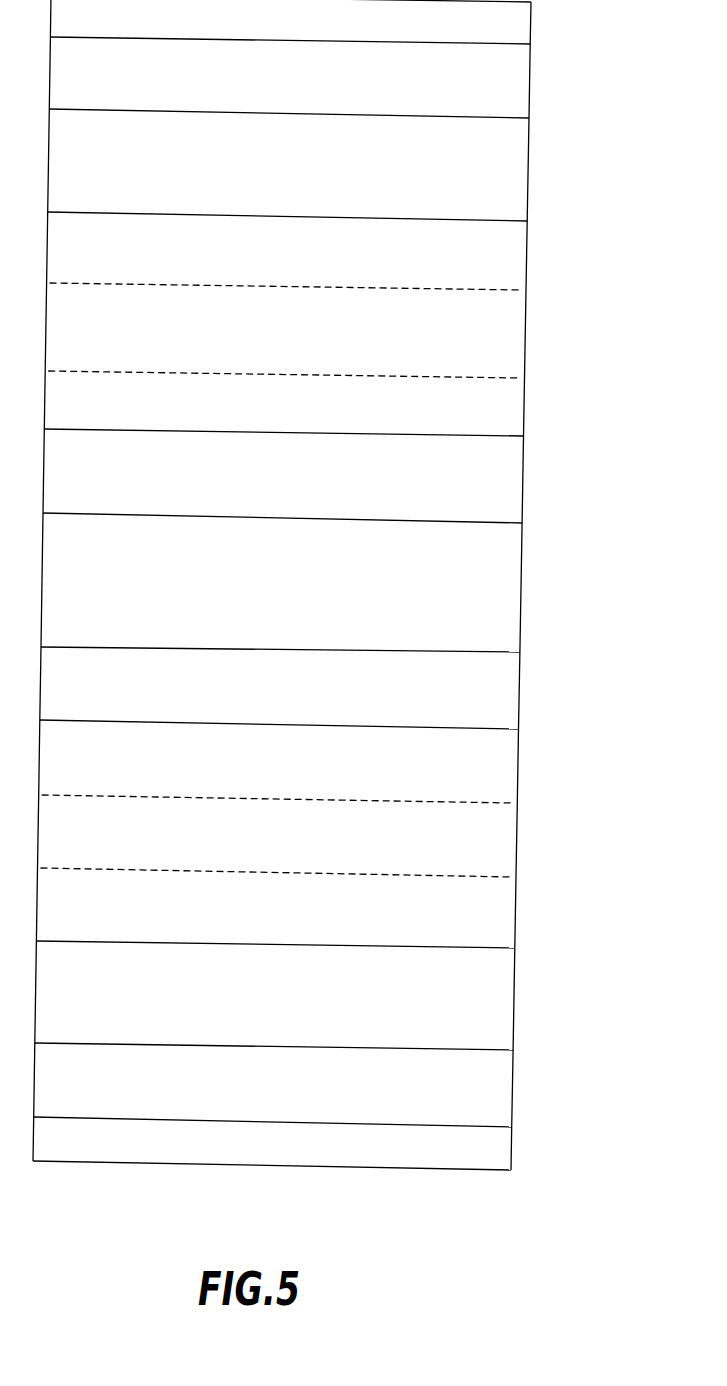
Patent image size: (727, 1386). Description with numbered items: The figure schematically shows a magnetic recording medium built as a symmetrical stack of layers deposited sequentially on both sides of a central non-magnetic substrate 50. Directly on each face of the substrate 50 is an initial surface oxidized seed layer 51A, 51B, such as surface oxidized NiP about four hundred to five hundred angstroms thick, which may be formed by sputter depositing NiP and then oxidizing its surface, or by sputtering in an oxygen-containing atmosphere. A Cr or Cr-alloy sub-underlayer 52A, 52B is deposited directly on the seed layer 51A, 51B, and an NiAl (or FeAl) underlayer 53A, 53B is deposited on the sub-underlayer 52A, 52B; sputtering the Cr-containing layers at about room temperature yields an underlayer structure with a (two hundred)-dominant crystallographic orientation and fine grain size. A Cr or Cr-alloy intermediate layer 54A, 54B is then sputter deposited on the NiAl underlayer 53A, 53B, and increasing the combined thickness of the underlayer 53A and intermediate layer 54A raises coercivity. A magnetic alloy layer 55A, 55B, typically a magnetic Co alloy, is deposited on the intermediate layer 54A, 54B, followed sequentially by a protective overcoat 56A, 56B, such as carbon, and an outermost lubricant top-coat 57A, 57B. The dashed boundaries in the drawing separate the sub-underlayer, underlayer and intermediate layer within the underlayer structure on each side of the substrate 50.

The non-magnetic substrate 50 is at (521, 592).
The surface oxidized seed layer 51A is at (523, 481).
The surface oxidized seed layer 51B is at (519, 688).
The Cr-containing sub-underlayer 52A is at (524, 408).
The Cr-containing sub-underlayer 52B is at (518, 764).
The NiAl underlayer 53A is at (526, 340).
The NiAl underlayer 53B is at (517, 837).
The intermediate layer 54A is at (527, 252).
The intermediate layer 54B is at (516, 917).
The magnetic alloy layer 55A is at (529, 169).
The magnetic alloy layer 55B is at (514, 1000).
The protective overcoat 56A is at (530, 83).
The protective overcoat 56B is at (512, 1092).
The lubricant top-coat 57A is at (531, 21).
The lubricant top-coat 57B is at (512, 1151).